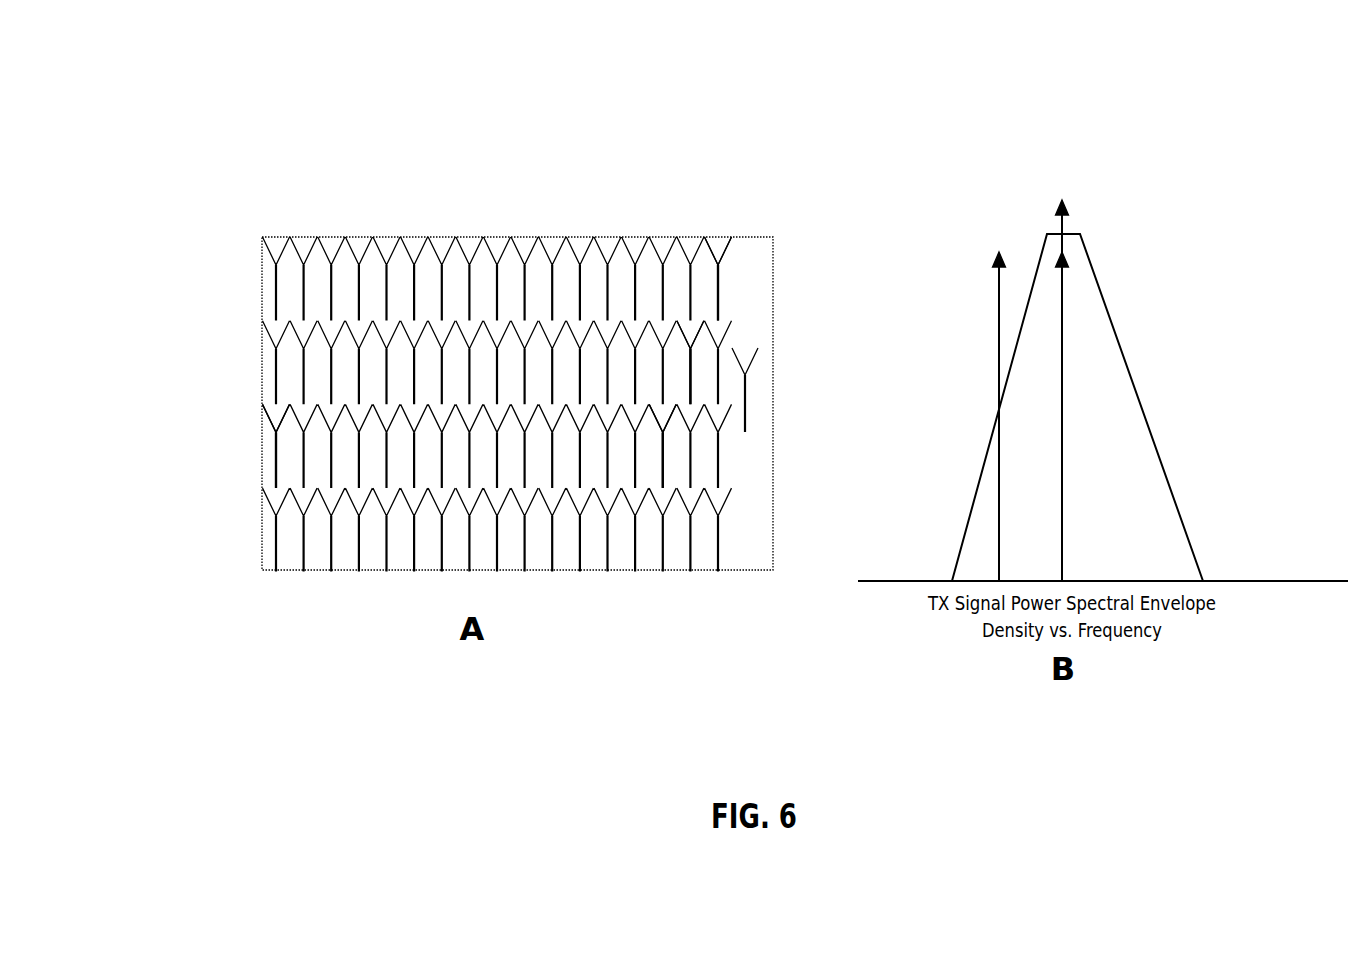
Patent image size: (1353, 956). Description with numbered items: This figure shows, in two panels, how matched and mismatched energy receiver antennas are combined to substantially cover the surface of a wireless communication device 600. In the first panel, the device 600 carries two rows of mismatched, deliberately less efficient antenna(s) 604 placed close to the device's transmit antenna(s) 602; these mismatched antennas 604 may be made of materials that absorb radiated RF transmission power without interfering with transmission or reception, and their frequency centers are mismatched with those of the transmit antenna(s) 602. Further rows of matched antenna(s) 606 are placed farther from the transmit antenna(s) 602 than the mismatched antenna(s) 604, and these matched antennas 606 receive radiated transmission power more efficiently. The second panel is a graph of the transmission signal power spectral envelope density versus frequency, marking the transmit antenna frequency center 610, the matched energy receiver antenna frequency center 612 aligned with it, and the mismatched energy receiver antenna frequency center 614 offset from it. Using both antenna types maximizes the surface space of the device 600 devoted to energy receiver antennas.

The wireless communication device 600 is at (475, 238).
The transmit antenna(s) 602 is at (752, 389).
The mismatched antenna(s) 604 is at (705, 292).
The matched antenna(s) 606 is at (649, 462).
The TX antenna frequency center 610 is at (1065, 228).
The ERX antenna frequency center (matched) 612 is at (1063, 373).
The ERX antenna frequency center (mismatched) 614 is at (995, 257).